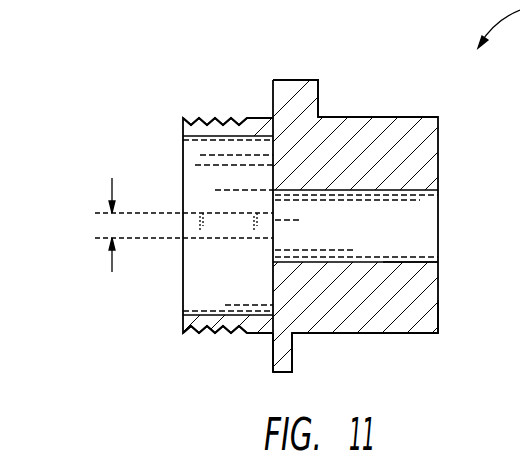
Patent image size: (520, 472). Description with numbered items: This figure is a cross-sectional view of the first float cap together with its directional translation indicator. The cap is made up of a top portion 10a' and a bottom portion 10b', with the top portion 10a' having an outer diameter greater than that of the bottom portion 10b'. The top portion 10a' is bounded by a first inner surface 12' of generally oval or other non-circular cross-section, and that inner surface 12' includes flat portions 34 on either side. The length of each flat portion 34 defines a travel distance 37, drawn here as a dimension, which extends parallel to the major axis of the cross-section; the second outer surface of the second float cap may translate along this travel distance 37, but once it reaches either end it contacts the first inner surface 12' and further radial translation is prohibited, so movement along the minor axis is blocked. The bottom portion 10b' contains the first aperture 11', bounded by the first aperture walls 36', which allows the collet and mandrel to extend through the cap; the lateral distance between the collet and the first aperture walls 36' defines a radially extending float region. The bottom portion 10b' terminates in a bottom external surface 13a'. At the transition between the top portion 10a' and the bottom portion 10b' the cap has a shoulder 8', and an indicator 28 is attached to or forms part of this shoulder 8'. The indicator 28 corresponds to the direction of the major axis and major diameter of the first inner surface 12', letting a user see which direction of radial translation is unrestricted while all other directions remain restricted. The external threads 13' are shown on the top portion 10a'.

The top portion 10a' is at (260, 200).
The bottom portion 10b' is at (260, 200).
The external threads 13' is at (191, 225).
The first inner surface 12' is at (201, 225).
The flat portions 34 is at (200, 235).
The travel distance 37 is at (110, 203).
The indicator 28 is at (318, 91).
The first aperture 11' is at (389, 226).
The first aperture walls 36' is at (444, 252).
The bottom external surface 13a' is at (452, 338).
The shoulder 8' is at (309, 356).